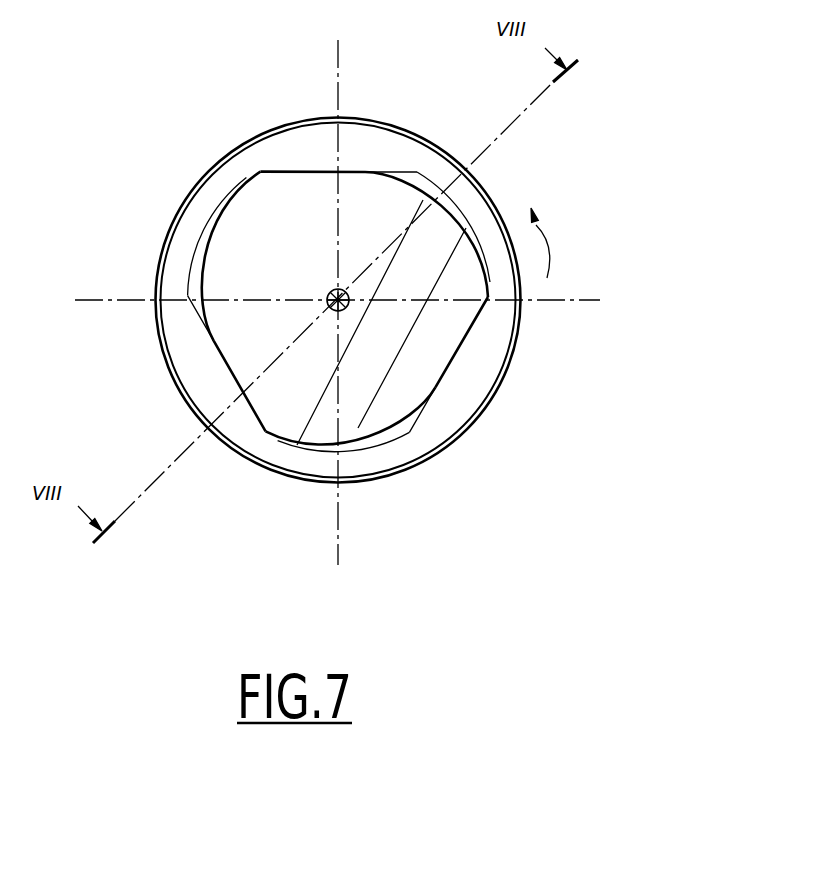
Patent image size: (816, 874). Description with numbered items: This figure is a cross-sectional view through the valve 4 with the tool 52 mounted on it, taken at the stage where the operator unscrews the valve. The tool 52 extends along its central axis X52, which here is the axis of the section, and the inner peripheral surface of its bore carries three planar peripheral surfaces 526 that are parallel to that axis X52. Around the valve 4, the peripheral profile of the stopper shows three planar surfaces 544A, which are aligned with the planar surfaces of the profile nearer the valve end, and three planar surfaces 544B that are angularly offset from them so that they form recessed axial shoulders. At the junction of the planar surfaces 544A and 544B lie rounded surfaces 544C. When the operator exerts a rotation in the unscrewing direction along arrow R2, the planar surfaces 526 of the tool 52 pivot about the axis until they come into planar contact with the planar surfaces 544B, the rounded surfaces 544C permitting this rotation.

The tool 52 is at (248, 160).
The valve 4 is at (358, 197).
The planar surfaces 544A is at (463, 208).
The planar surfaces 544B is at (287, 150).
The rounded surfaces 544C is at (392, 150).
The planar peripheral surfaces 526 is at (318, 200).
The central axis X52 is at (326, 290).
The arrow R2 is at (558, 243).